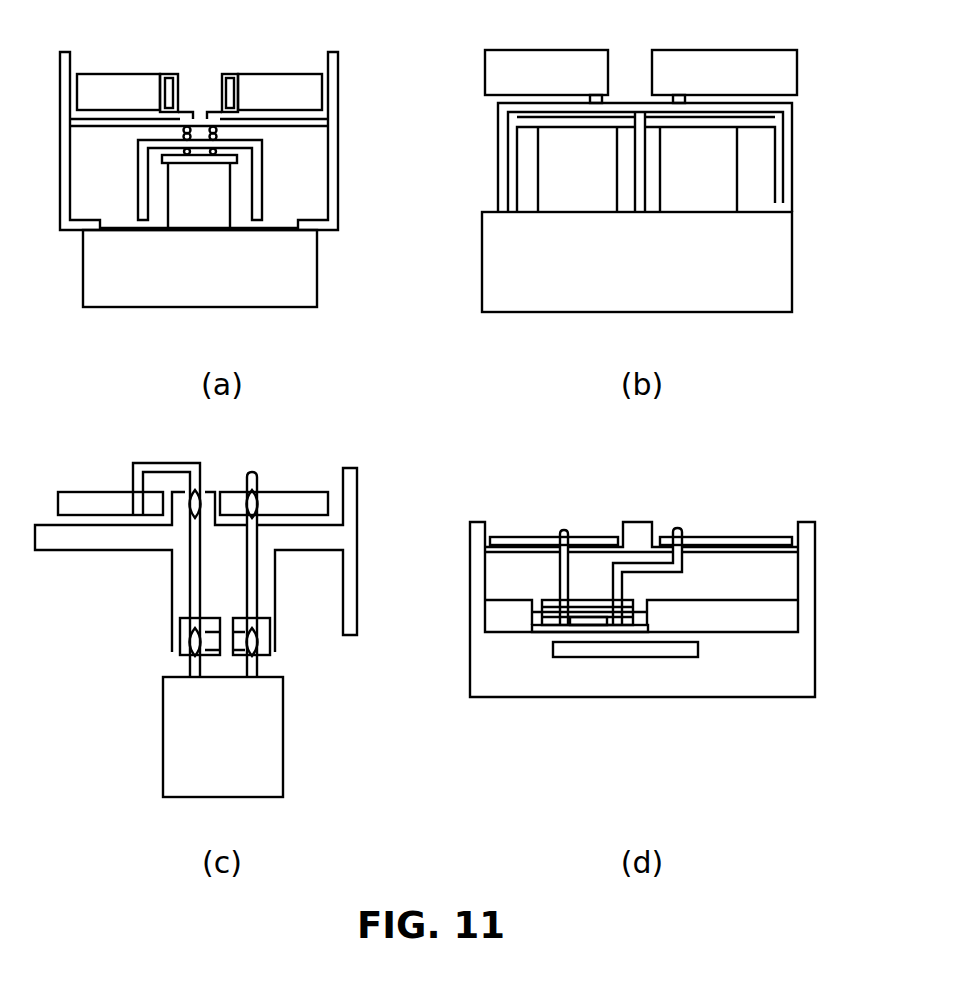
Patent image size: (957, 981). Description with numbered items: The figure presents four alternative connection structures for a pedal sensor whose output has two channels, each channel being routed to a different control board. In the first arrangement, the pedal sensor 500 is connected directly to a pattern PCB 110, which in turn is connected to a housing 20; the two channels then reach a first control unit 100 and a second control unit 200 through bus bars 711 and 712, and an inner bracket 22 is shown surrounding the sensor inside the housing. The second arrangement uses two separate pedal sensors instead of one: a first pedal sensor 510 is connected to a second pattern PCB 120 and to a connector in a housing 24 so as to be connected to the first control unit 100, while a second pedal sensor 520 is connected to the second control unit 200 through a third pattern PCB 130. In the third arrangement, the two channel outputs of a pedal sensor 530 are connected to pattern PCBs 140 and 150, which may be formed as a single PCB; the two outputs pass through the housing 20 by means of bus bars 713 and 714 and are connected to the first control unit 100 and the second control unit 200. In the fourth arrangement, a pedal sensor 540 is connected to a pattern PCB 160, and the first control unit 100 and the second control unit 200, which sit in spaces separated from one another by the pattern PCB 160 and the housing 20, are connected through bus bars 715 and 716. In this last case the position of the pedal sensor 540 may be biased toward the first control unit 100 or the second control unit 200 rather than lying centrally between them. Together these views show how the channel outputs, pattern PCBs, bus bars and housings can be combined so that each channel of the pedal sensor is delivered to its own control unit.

The housing 20 is at (302, 126).
The inner bracket 22 is at (140, 177).
The housing 24 is at (620, 104).
The first control unit 100 is at (97, 82).
The pattern PCB 110 is at (232, 170).
The second pattern PCB 120 is at (508, 123).
The third pattern PCB 130 is at (782, 123).
The pattern PCB 140 is at (178, 652).
The pattern PCB 150 is at (268, 652).
The pattern PCB 160 is at (543, 615).
The second control unit 200 is at (290, 80).
The pedal sensor 500 is at (220, 203).
The first pedal sensor 510 is at (552, 172).
The second pedal sensor 520 is at (733, 172).
The pedal sensor 530 is at (273, 720).
The pedal sensor 540 is at (587, 622).
The bus bar 711 is at (163, 73).
The bus bar 712 is at (237, 73).
The bus bar 713 is at (155, 463).
The bus bar 714 is at (252, 472).
The bus bar 715 is at (563, 528).
The bus bar 716 is at (680, 526).